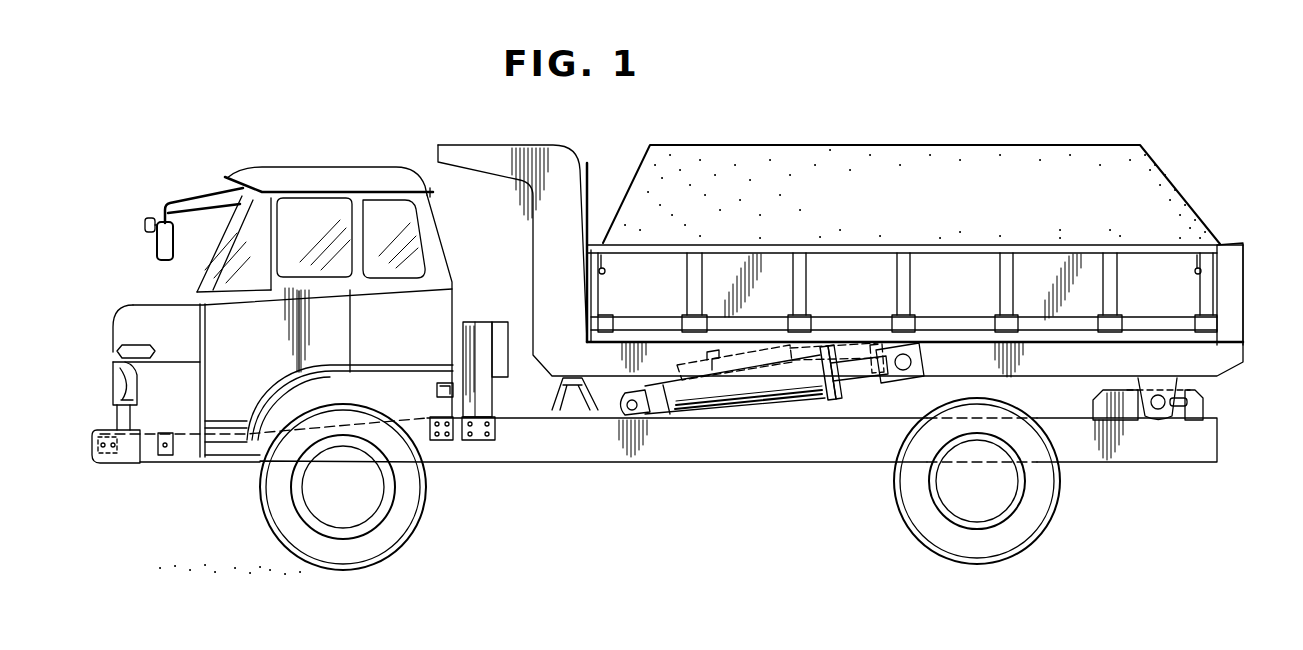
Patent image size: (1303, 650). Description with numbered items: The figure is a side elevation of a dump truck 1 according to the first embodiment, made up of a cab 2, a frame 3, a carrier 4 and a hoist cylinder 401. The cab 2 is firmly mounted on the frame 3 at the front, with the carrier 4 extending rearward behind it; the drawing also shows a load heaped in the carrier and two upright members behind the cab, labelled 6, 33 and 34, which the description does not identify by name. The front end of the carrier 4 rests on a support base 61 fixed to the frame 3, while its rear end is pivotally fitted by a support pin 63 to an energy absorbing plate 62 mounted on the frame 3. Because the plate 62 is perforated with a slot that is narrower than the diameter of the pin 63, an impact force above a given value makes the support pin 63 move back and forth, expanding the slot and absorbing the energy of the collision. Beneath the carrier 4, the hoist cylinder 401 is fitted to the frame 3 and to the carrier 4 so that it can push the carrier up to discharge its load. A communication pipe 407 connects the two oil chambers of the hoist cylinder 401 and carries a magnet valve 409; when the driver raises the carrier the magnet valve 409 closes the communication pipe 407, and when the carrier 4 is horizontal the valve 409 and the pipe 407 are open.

The dump truck 1 is at (740, 137).
The cab 2 is at (333, 171).
The frame 3 is at (631, 450).
The carrier 4 is at (1232, 262).
The load 6 is at (951, 160).
The mounting post 33 is at (473, 322).
The mounting post 34 is at (502, 323).
The support base 61 is at (565, 400).
The hoist cylinder 401 is at (768, 405).
The communication pipe 407 is at (778, 380).
The magnet valve 409 is at (708, 382).
The energy absorbing plate 62 is at (1196, 411).
The support pin 63 is at (1157, 414).